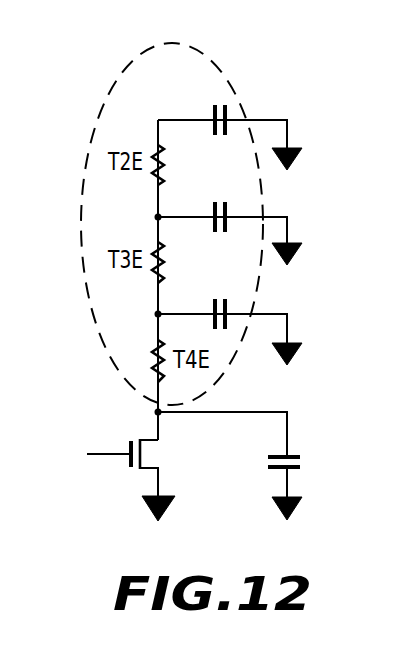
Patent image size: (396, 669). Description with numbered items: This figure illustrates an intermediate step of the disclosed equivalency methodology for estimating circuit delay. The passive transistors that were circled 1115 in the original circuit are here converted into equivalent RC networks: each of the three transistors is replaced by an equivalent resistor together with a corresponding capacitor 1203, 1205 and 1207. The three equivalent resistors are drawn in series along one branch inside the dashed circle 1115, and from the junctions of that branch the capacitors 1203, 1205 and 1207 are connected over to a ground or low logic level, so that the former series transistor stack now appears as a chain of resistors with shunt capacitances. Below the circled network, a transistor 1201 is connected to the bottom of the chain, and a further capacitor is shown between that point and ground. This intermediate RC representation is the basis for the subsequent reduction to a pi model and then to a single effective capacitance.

The circled transistors 1115 is at (242, 70).
The transistor 1201 is at (134, 442).
The capacitor 1203 is at (215, 106).
The capacitor 1205 is at (216, 203).
The capacitor 1207 is at (216, 300).